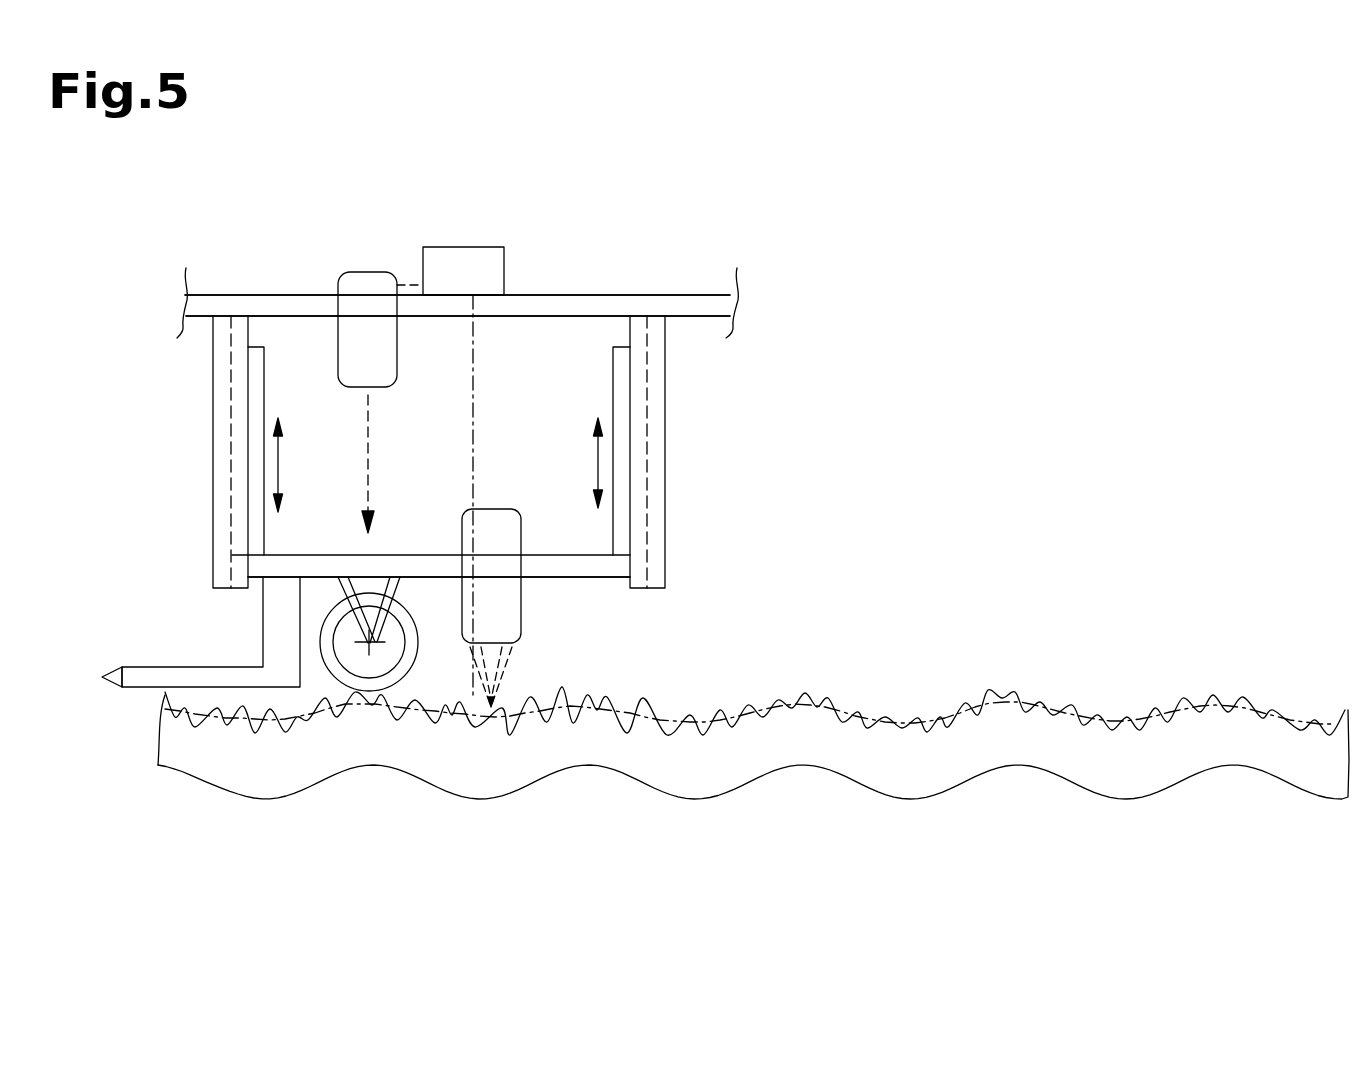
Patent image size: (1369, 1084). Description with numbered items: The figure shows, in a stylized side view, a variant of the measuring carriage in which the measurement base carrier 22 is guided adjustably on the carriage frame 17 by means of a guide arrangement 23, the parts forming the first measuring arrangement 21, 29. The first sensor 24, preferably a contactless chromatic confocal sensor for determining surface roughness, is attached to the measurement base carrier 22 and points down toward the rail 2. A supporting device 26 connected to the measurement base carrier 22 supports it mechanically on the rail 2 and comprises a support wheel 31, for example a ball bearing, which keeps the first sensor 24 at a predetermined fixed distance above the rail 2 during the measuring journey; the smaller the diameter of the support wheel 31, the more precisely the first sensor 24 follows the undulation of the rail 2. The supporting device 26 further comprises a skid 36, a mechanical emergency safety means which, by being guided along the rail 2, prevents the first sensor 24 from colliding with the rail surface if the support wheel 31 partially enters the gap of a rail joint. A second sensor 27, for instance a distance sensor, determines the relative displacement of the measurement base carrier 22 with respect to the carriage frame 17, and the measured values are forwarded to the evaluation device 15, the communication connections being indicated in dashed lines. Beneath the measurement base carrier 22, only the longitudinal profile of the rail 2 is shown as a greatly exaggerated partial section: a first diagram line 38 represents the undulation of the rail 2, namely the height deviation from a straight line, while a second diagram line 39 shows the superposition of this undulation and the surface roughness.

The rail 2 is at (1223, 815).
The evaluation device 15 is at (480, 286).
The carriage frame 17 is at (588, 283).
The first measuring arrangement 21 is at (524, 243).
The bearing 29 is at (700, 285).
The measurement base carrier 22 is at (555, 600).
The guide arrangement 23 is at (685, 442).
The first sensor 24 is at (495, 530).
The supporting device 26 is at (345, 718).
The second sensor 27 is at (365, 282).
The support wheel 31 is at (385, 658).
The skid 36 is at (133, 703).
The first diagram line 38 is at (836, 700).
The second diagram line 39 is at (967, 690).